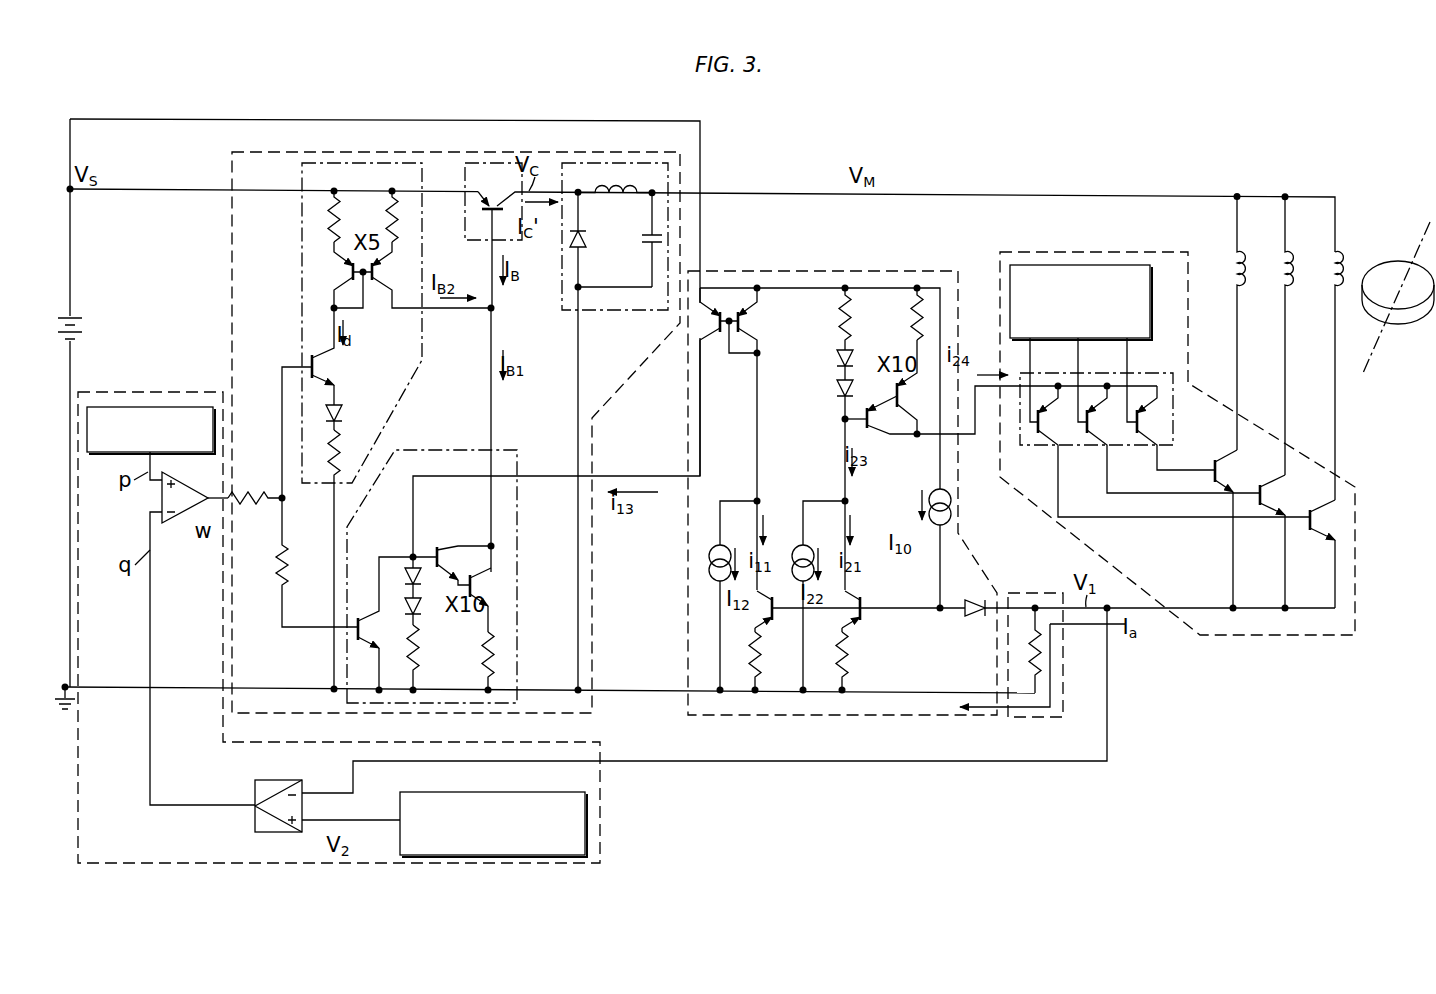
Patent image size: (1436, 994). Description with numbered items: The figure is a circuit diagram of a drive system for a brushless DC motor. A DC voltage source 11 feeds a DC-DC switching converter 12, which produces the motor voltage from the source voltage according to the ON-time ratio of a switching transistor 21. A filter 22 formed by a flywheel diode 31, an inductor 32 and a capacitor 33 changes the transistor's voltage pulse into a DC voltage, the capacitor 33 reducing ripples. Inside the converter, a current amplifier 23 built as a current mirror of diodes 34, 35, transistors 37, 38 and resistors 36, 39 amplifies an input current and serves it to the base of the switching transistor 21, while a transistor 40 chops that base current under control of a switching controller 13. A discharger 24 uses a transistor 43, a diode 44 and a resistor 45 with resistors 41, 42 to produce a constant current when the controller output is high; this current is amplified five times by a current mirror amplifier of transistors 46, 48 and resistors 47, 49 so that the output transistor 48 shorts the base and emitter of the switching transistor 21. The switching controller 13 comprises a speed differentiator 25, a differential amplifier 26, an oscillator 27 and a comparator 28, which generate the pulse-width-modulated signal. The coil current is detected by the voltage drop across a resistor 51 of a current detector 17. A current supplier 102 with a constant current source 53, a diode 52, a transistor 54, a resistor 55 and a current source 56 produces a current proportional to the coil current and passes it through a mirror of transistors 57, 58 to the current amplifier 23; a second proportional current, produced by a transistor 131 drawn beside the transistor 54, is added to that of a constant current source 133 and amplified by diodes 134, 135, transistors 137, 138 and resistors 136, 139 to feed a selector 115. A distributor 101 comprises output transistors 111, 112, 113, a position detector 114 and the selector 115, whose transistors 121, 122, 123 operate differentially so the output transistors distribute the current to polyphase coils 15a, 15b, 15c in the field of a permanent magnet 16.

The DC voltage source 11 is at (83, 341).
The DC-DC switching converter 12 is at (318, 150).
The switching controller 13 is at (375, 866).
The polyphase coil 15a is at (1331, 278).
The polyphase coil 15b is at (1282, 288).
The polyphase coil 15c is at (1232, 278).
The permanent magnet 16 is at (1410, 328).
The current detector 17 is at (1032, 722).
The switching transistor 21 is at (460, 213).
The filter 22 is at (650, 312).
The current amplifier 23 is at (513, 532).
The discharger 24 is at (301, 207).
The speed differentiator 25 is at (420, 792).
The differential amplifier 26 is at (282, 780).
The oscillator 27 is at (100, 407).
The comparator 28 is at (190, 495).
The flywheel diode 31 is at (589, 242).
The inductor 32 is at (604, 200).
The capacitor 33 is at (649, 246).
The diode 34 is at (420, 580).
The diode 35 is at (420, 609).
The resistor 36 is at (421, 641).
The transistor 37 is at (445, 547).
The transistor 38 is at (492, 586).
The resistor 39 is at (480, 662).
The transistor 40 is at (366, 642).
The resistor 41 is at (250, 506).
The resistor 42 is at (280, 590).
The transistor 43 is at (319, 356).
The diode 44 is at (343, 410).
The resistor 45 is at (343, 456).
The transistor 46 is at (346, 274).
The resistor 47 is at (322, 229).
The transistor 48 is at (383, 284).
The resistor 49 is at (373, 216).
The resistor 51 is at (1045, 668).
The diode 52 is at (978, 613).
The constant current source 53 is at (935, 490).
The transistor 54 is at (760, 622).
The resistor 55 is at (758, 660).
The current source 56 is at (717, 584).
The transistor 57 is at (744, 348).
The transistor 58 is at (723, 336).
The distributor 101 is at (1225, 640).
The current supplier 102 is at (910, 717).
The output transistor 111 is at (1326, 536).
The output transistor 112 is at (1278, 500).
The output transistor 113 is at (1228, 474).
The position detector 114 is at (1150, 330).
The selector 115 is at (1030, 452).
The transistor 121 is at (1160, 415).
The transistor 122 is at (855, 668).
The transistor 123 is at (1172, 432).
The transistor 131 is at (858, 624).
The constant current source 133 is at (800, 546).
The diode 134 is at (838, 392).
The diode 135 is at (838, 355).
The resistor 136 is at (842, 312).
The transistor 137 is at (880, 436).
The transistor 138 is at (895, 394).
The resistor 139 is at (912, 323).